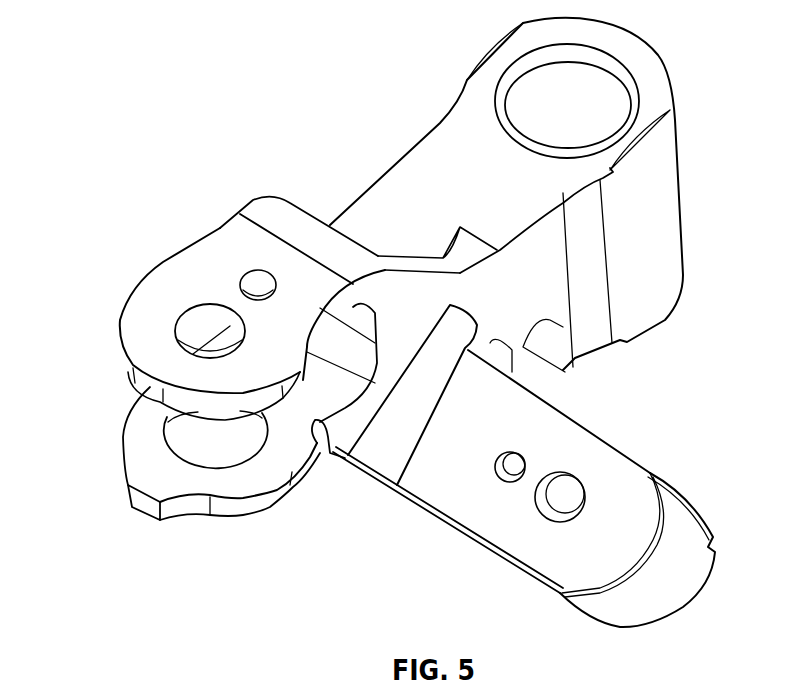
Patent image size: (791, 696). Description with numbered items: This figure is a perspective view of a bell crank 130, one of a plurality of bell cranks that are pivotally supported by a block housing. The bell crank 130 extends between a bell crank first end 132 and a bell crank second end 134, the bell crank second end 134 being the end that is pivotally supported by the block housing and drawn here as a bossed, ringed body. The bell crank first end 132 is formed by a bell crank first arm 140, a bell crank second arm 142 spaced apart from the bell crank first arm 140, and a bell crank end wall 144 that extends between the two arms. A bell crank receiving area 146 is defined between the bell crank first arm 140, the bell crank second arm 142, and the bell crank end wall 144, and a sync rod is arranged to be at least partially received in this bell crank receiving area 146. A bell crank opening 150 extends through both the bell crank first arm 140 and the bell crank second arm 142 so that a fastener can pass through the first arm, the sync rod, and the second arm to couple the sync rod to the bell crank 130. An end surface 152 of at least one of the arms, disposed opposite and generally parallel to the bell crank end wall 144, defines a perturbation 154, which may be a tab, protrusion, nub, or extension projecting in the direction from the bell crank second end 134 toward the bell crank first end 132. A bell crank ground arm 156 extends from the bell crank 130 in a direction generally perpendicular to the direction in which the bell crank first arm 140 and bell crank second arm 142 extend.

The bell crank 130 is at (216, 76).
The bell crank first end 132 is at (227, 501).
The bell crank second end 134 is at (670, 46).
The bell crank first arm 140 is at (254, 325).
The bell crank second arm 142 is at (262, 518).
The bell crank end wall 144 is at (363, 322).
The bell crank receiving area 146 is at (320, 400).
The bell crank opening 150 is at (207, 303).
The end surface 152 is at (128, 370).
The perturbation 154 is at (137, 516).
The bell crank ground arm 156 is at (603, 426).